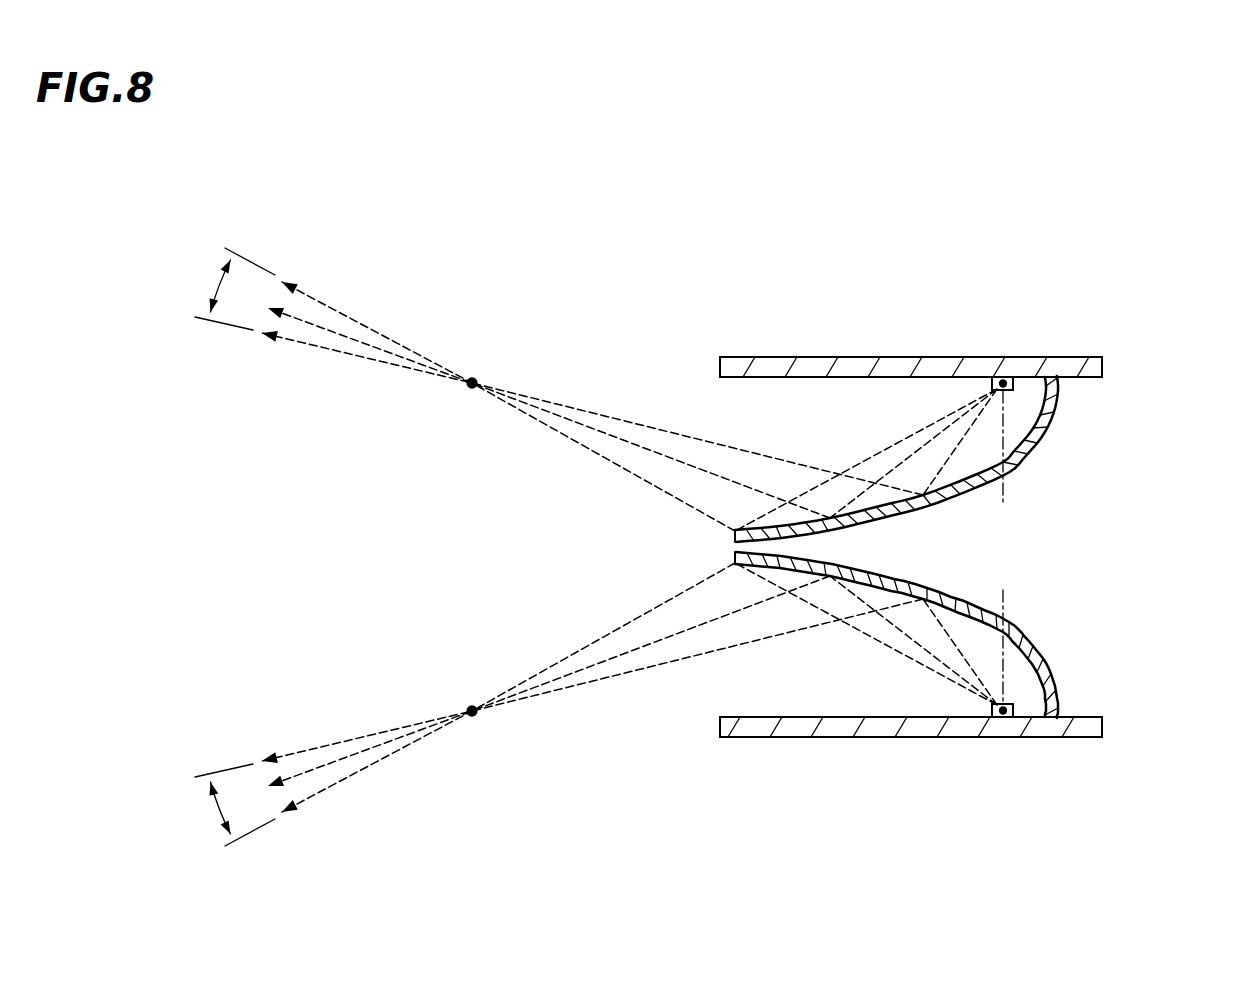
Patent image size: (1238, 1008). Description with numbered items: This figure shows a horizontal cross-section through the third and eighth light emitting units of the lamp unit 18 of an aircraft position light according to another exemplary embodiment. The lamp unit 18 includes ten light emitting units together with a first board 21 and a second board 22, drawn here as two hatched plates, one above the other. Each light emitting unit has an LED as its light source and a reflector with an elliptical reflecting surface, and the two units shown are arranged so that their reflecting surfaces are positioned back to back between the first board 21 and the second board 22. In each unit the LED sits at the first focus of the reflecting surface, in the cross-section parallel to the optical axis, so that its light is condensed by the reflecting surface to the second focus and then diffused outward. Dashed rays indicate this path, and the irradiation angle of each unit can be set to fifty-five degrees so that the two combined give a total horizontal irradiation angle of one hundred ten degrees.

The lamp unit 18 is at (698, 536).
The first board 21 is at (803, 737).
The second board 22 is at (815, 357).